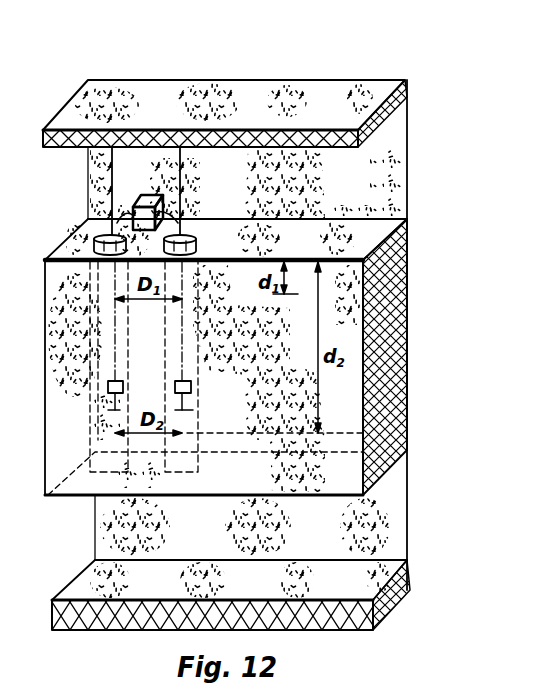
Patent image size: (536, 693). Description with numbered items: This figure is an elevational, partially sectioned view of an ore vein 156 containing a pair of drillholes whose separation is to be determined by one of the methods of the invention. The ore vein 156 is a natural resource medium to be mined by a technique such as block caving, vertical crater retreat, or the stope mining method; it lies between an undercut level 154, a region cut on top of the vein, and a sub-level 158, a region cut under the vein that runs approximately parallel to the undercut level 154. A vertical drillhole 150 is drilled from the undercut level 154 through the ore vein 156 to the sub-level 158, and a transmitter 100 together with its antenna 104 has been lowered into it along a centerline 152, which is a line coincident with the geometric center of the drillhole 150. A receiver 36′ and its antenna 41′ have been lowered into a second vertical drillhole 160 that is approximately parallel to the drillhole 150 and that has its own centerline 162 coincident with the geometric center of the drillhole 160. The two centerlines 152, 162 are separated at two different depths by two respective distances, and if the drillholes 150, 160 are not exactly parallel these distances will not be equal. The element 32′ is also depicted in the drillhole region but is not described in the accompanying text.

The centerline 152 is at (93, 169).
The undercut level 154 is at (374, 195).
The ore vein 156 is at (406, 336).
The sub-level 158 is at (330, 541).
The vertical drillhole 150 is at (88, 237).
The second vertical drillhole 160 is at (187, 238).
The centerline 162 is at (182, 173).
The transmitter 100 is at (107, 391).
The antenna 104 is at (112, 408).
The receiver 36′ is at (191, 388).
The antenna 41′ is at (193, 410).
The cube element 32′ is at (147, 201).